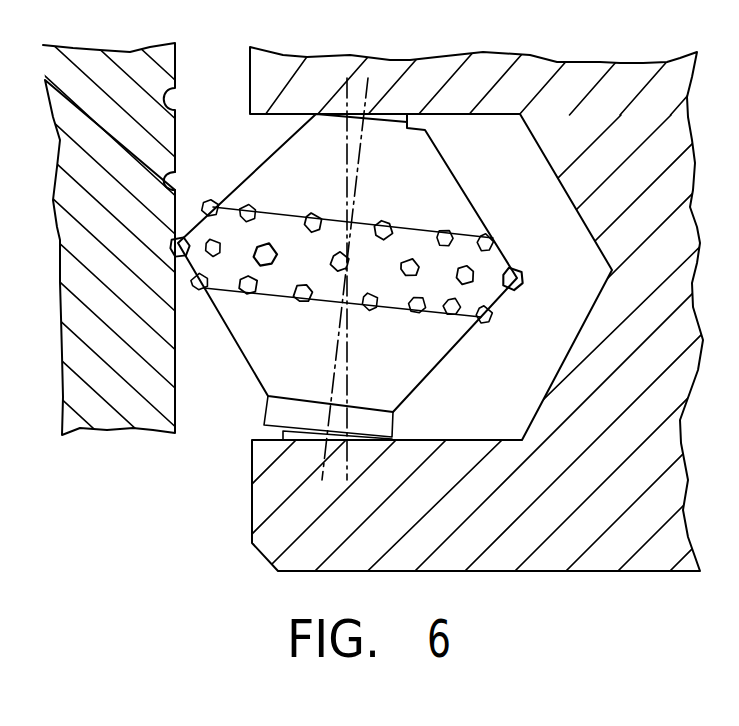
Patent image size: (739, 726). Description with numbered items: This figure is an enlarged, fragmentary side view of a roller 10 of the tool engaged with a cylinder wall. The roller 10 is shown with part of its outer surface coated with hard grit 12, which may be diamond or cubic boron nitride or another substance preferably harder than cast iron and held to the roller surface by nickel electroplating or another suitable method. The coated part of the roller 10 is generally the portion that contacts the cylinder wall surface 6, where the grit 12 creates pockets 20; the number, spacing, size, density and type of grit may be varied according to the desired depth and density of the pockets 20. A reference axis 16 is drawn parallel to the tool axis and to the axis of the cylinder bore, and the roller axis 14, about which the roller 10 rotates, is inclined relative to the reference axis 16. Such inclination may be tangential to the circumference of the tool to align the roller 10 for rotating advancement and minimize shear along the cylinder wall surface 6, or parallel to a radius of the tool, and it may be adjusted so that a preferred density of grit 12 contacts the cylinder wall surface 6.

The cylinder wall surface 6 is at (177, 138).
The roller 10 is at (425, 192).
The grit 12 is at (523, 292).
The roller axis 14 is at (366, 91).
The reference axis 16 is at (346, 100).
The pockets 20 is at (168, 183).